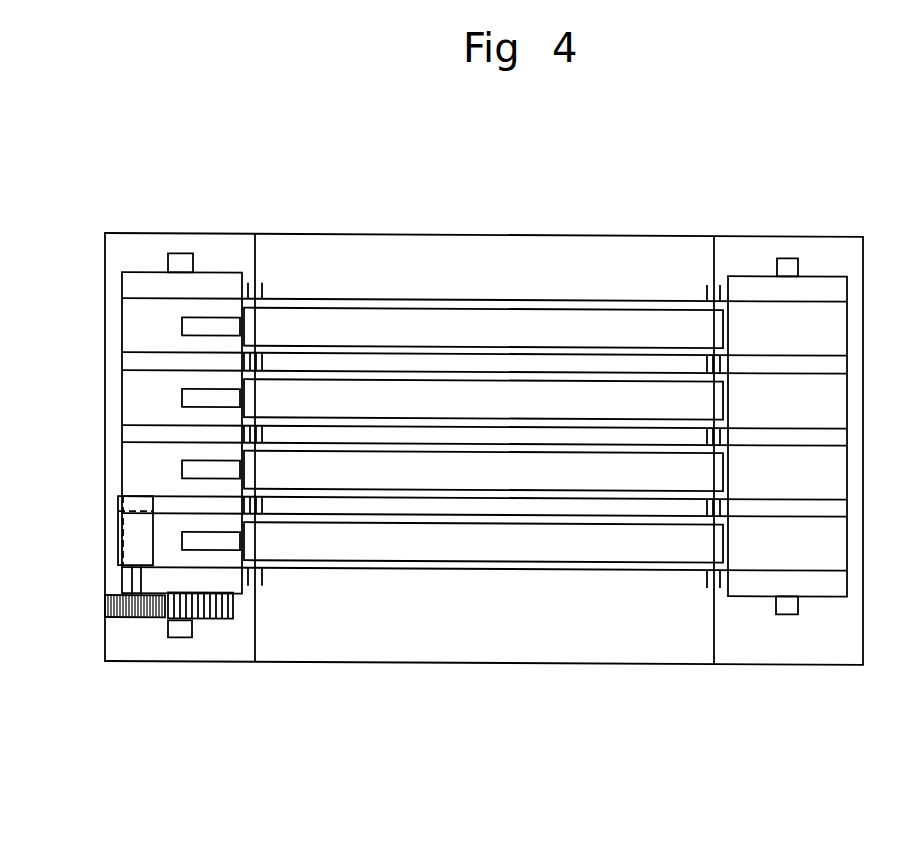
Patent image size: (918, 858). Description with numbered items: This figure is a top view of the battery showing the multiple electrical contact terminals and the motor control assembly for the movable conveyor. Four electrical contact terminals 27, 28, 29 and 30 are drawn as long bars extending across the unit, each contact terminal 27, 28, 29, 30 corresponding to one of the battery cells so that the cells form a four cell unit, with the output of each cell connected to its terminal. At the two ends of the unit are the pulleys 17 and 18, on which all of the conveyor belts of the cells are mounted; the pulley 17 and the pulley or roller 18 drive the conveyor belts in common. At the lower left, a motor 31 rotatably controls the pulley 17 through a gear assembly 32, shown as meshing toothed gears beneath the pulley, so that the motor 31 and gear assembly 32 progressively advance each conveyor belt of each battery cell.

The pulley 17 is at (143, 282).
The pulley 18 is at (829, 287).
The electrical contact terminal 27 is at (223, 326).
The electrical contact terminal 28 is at (223, 398).
The electrical contact terminal 29 is at (223, 469).
The electrical contact terminal 30 is at (223, 540).
The motor 31 is at (135, 531).
The gear assembly 32 is at (117, 617).